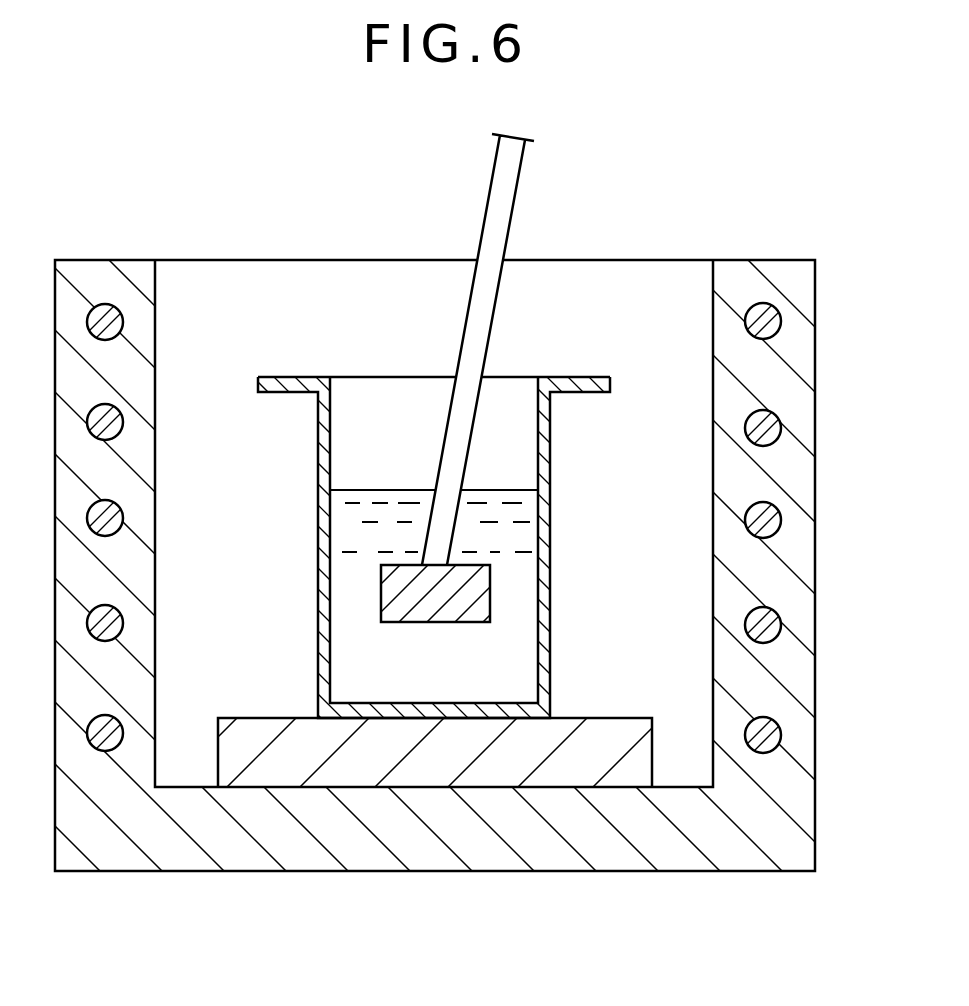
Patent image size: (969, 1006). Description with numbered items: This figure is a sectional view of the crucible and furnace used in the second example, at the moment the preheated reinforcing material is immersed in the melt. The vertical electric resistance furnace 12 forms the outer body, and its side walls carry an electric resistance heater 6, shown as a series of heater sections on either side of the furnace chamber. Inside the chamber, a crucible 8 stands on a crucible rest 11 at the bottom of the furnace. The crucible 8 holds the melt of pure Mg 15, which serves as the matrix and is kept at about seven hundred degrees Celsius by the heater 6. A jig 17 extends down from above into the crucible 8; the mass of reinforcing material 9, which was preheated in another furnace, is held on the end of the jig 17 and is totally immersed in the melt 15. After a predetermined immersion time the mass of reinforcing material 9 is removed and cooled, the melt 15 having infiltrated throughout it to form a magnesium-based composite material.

The electric resistance heater 6 is at (760, 313).
The crucible 8 is at (552, 491).
The mass of reinforcing material 9 is at (468, 600).
The crucible rest 11 is at (600, 742).
The vertical electric resistance furnace 12 is at (815, 812).
The pure Mg melt 15 is at (348, 640).
The jig 17 is at (503, 192).